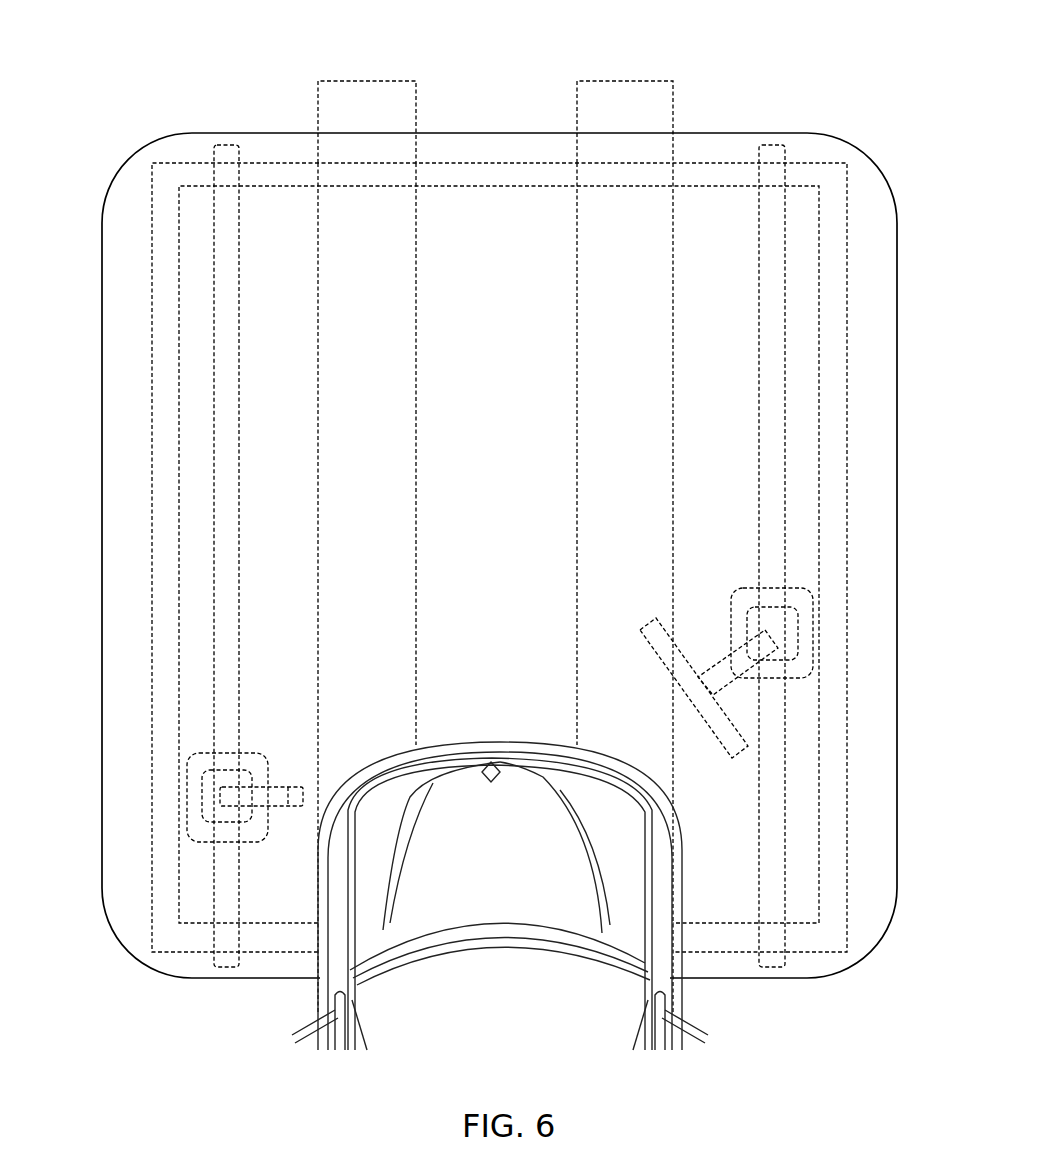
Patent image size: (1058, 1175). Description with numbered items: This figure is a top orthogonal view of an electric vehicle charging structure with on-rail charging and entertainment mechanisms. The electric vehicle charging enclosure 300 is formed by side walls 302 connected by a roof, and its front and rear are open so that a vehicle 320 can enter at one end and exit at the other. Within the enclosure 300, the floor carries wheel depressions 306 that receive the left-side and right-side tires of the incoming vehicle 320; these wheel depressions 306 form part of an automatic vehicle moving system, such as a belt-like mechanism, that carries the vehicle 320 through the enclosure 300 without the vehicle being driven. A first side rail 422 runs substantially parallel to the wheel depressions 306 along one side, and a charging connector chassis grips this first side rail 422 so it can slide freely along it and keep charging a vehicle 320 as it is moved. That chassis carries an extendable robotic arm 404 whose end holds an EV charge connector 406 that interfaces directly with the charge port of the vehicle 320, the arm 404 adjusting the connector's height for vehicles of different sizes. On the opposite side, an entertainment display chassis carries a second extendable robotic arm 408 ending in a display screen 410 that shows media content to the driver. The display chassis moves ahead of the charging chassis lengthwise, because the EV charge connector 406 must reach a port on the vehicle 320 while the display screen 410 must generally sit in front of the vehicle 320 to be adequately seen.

The electric vehicle charging enclosure 300 is at (236, 96).
The side walls 302 is at (100, 510).
The wheel depressions 306 is at (676, 88).
The vehicle 320 is at (290, 1032).
The extendable robotic arm 404 is at (220, 797).
The EV charge connector 406 is at (302, 783).
The extendable robotic arm 408 is at (768, 640).
The display screen 410 is at (745, 737).
The first side rail 422 is at (213, 322).